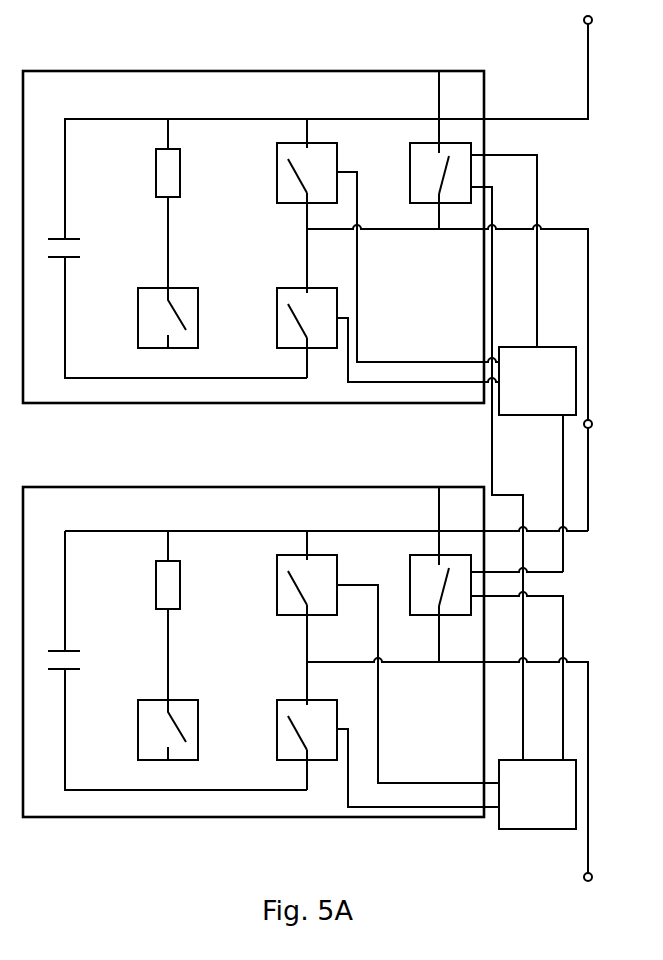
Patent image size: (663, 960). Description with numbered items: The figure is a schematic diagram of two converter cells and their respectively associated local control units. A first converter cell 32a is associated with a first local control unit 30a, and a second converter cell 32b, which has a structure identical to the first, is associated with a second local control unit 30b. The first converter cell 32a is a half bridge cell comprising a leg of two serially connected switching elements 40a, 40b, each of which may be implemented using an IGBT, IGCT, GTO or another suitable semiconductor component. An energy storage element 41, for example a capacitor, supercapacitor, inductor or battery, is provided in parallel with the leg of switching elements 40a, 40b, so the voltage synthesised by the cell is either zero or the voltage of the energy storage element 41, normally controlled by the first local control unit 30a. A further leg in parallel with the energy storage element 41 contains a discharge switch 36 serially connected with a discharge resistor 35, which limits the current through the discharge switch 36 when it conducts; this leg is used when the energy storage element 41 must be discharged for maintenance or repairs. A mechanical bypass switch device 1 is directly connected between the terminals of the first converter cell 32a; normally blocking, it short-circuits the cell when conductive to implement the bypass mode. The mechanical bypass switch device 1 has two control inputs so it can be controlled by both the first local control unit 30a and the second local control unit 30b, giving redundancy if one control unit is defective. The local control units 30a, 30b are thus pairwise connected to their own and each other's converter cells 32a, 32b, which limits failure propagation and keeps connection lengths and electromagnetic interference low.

The first converter cell 32a is at (276, 106).
The second converter cell 32b is at (276, 518).
The energy storage element 41 is at (70, 238).
The discharge resistor 35 is at (180, 181).
The discharge switch 36 is at (137, 324).
The switching element 40a is at (373, 147).
The switching element 40b is at (277, 303).
The mechanical bypass switch device 1 is at (408, 176).
The first local control unit 30a is at (558, 378).
The second local control unit 30b is at (558, 791).